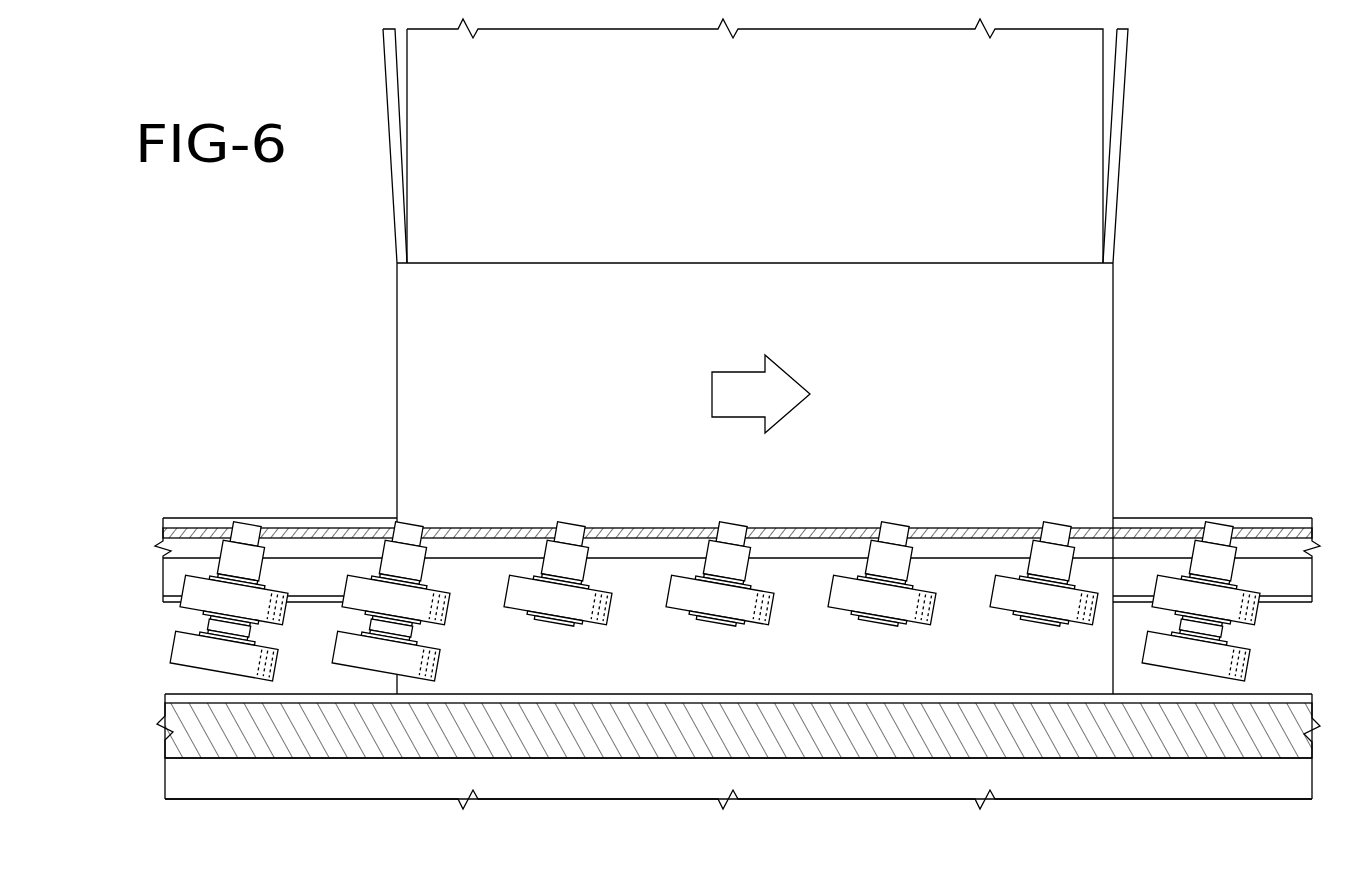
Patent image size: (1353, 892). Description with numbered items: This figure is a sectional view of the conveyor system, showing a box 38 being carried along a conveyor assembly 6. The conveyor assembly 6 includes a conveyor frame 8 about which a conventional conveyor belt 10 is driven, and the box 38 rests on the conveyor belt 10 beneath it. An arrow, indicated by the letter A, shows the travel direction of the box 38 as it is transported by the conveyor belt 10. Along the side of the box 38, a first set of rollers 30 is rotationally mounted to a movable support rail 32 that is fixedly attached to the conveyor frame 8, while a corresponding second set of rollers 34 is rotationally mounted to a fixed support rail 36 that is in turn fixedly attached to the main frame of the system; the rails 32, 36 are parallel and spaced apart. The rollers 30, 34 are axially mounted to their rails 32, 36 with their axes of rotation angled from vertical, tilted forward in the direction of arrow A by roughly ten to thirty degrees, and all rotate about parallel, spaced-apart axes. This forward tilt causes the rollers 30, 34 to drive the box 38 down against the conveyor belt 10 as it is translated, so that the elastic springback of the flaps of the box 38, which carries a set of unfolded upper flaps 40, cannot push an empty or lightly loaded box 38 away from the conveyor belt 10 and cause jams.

The conveyor assembly 6 is at (228, 808).
The conveyor frame 8 is at (172, 780).
The conveyor belt 10 is at (452, 698).
The first set of rollers 30 is at (362, 590).
The movable support rail 32 is at (197, 522).
The second set of rollers 34 is at (355, 648).
The fixed support rail 36 is at (170, 577).
The box 38 is at (440, 362).
The upper flaps 40 is at (433, 75).
The arrow indicating travel direction A is at (740, 372).